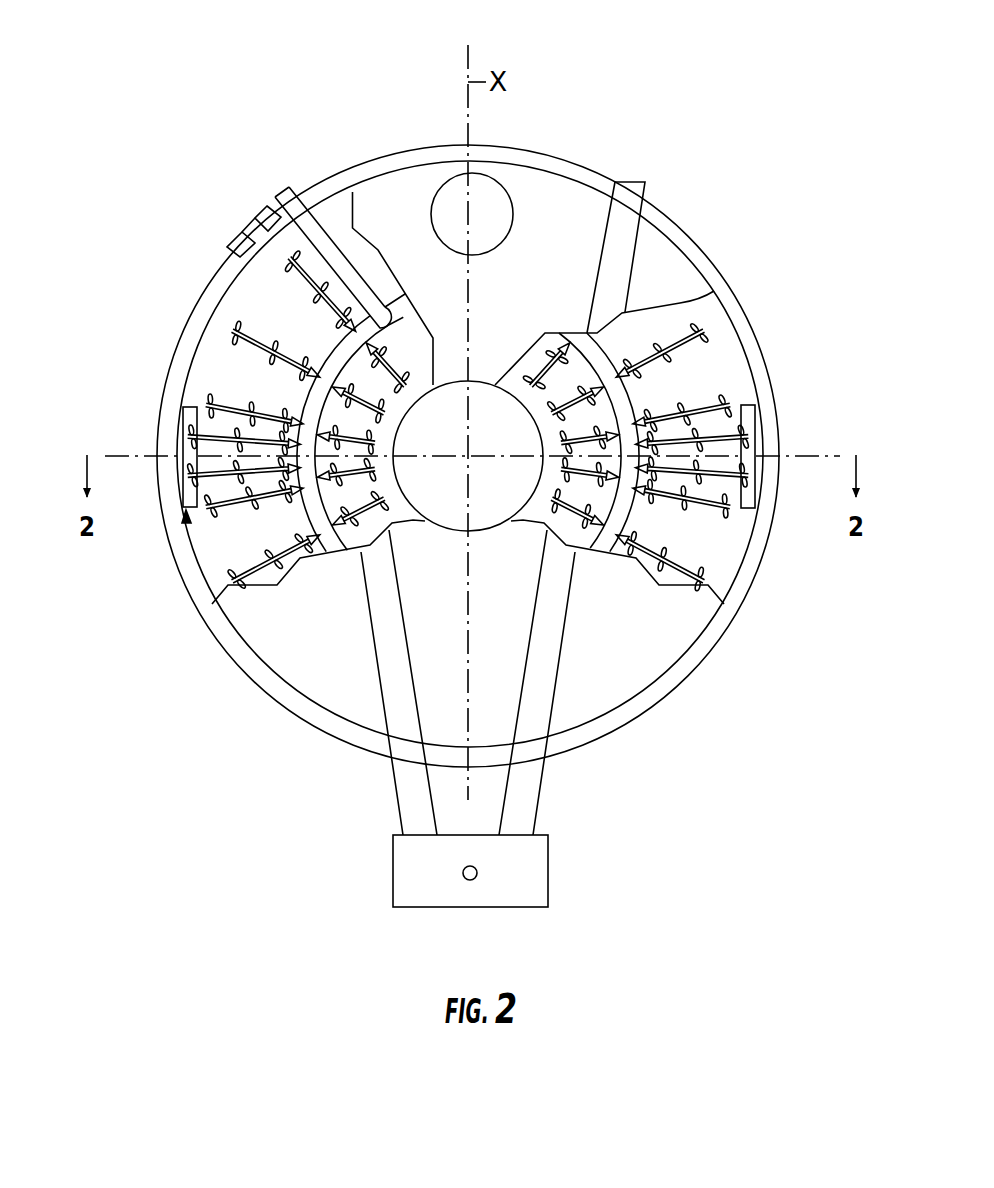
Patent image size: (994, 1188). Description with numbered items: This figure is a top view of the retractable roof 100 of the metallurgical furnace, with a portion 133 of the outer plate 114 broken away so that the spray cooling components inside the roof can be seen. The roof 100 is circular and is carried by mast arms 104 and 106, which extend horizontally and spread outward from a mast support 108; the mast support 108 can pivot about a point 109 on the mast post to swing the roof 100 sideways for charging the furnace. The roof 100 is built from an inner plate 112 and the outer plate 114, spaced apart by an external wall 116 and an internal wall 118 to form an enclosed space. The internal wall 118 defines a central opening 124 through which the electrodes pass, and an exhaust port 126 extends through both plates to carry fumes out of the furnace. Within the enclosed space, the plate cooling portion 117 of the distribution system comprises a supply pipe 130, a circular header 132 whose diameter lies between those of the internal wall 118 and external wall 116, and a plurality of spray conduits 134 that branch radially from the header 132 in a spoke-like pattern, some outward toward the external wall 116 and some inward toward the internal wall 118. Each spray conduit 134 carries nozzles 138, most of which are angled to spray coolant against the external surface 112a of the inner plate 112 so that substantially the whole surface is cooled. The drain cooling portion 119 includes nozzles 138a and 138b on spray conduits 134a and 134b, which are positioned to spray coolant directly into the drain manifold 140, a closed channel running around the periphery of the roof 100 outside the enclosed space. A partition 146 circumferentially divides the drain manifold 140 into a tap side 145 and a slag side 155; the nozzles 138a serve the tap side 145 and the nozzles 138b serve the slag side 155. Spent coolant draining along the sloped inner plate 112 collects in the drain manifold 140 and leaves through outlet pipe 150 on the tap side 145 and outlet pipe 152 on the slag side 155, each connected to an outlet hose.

The roof 100 is at (748, 226).
The mast arm 104 is at (398, 786).
The mast arm 106 is at (544, 787).
The mast support 108 is at (549, 870).
The point 109 is at (471, 881).
The inner plate 112 is at (208, 556).
The external surface 112a is at (238, 378).
The outer plate 114 is at (668, 650).
The external wall 116 is at (292, 690).
The plate cooling portion 117 is at (657, 243).
The internal wall 118 is at (445, 528).
The drain cooling portion 119 is at (186, 522).
The central opening 124 is at (453, 433).
The exhaust port 126 is at (457, 225).
The supply pipe 130 is at (285, 191).
The header 132 is at (342, 348).
The portion 133 is at (737, 540).
The spray conduit 134 is at (722, 396).
The spray conduit 134a is at (205, 410).
The spray conduit 134b is at (752, 405).
The nozzle 138 is at (735, 556).
The nozzle 138a is at (190, 441).
The nozzle 138b is at (752, 440).
The drain manifold 140 is at (646, 706).
The tap side 145 is at (86, 368).
The partition 146 is at (298, 244).
The outlet pipe 150 is at (234, 242).
The outlet pipe 152 is at (258, 211).
The slag side 155 is at (868, 440).